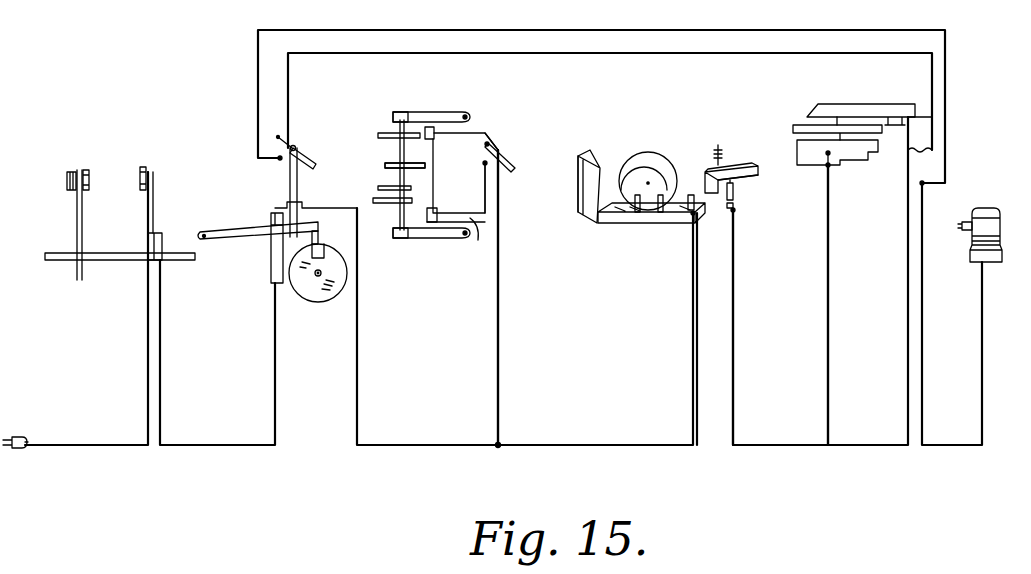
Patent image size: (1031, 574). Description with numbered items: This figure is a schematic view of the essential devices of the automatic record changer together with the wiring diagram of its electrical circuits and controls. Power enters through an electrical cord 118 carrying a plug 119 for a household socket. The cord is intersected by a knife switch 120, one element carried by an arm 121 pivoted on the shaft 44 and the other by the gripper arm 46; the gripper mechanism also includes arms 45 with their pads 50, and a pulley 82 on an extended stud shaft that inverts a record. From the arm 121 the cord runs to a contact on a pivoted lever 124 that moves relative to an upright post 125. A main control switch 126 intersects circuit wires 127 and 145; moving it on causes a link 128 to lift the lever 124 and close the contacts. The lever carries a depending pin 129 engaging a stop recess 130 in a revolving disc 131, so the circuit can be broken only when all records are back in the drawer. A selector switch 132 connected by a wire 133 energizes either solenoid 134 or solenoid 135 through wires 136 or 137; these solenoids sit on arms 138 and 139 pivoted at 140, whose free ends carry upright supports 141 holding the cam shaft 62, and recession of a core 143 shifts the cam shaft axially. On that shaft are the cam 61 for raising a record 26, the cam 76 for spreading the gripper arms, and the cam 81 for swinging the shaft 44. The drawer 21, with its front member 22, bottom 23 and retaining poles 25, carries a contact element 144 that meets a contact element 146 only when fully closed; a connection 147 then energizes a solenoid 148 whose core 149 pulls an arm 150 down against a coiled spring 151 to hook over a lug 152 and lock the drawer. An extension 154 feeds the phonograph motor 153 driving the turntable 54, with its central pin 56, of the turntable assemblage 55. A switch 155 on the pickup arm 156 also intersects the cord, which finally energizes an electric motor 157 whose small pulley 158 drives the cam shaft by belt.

The drawer 21 is at (578, 208).
The front member 22 is at (590, 162).
The bottom 23 is at (610, 224).
The retaining poles 25 is at (640, 214).
The record 26 is at (645, 160).
The shaft 44 is at (116, 262).
The arms 45 is at (76, 218).
The arms 46 is at (146, 214).
The resilient discs or pads 50 is at (142, 168).
The phonograph turntable 54 is at (795, 125).
The phonograph turntable assemblage 55 is at (877, 163).
The central pin or projection 56 is at (838, 120).
The cam 61 is at (412, 168).
The cam shaft 62 is at (390, 153).
The cam 76 is at (388, 132).
The cam 81 is at (388, 204).
The pulley 82 is at (66, 178).
The electrical cord 118 is at (90, 445).
The plug 119 is at (18, 446).
The knife switch 120 is at (155, 233).
The arm 121 is at (162, 248).
The lever 124 is at (250, 230).
The upright post 125 is at (268, 278).
The main control switch 126 is at (314, 160).
The circuit wire 127 is at (290, 88).
The link 128 is at (290, 178).
The depending pin 129 is at (318, 238).
The stop recess 130 is at (325, 248).
The disc 131 is at (337, 303).
The switch 132 is at (512, 172).
The wire 133 is at (498, 296).
The solenoid 134 is at (435, 208).
The solenoid 135 is at (430, 139).
The wire 136 is at (478, 240).
The wire 137 is at (487, 132).
The arm 138 is at (422, 238).
The arm 139 is at (420, 110).
The pivot 140 is at (467, 115).
The upright supports 141 is at (396, 110).
The core 143 is at (432, 126).
The contact element 144 is at (697, 230).
The circuit wire 145 is at (325, 30).
The contact element 146 is at (733, 250).
The electrical connection 147 is at (735, 206).
The solenoid 148 is at (735, 192).
The core 149 is at (735, 181).
The arm 150 is at (730, 170).
The coiled spring 151 is at (718, 145).
The lug 152 is at (692, 192).
The phonograph motor 153 is at (835, 175).
The extension 154 is at (828, 291).
The switch 155 is at (908, 118).
The phonograph pickup arm 156 is at (840, 115).
The electric motor 157 is at (988, 212).
The small pulley 158 is at (966, 220).